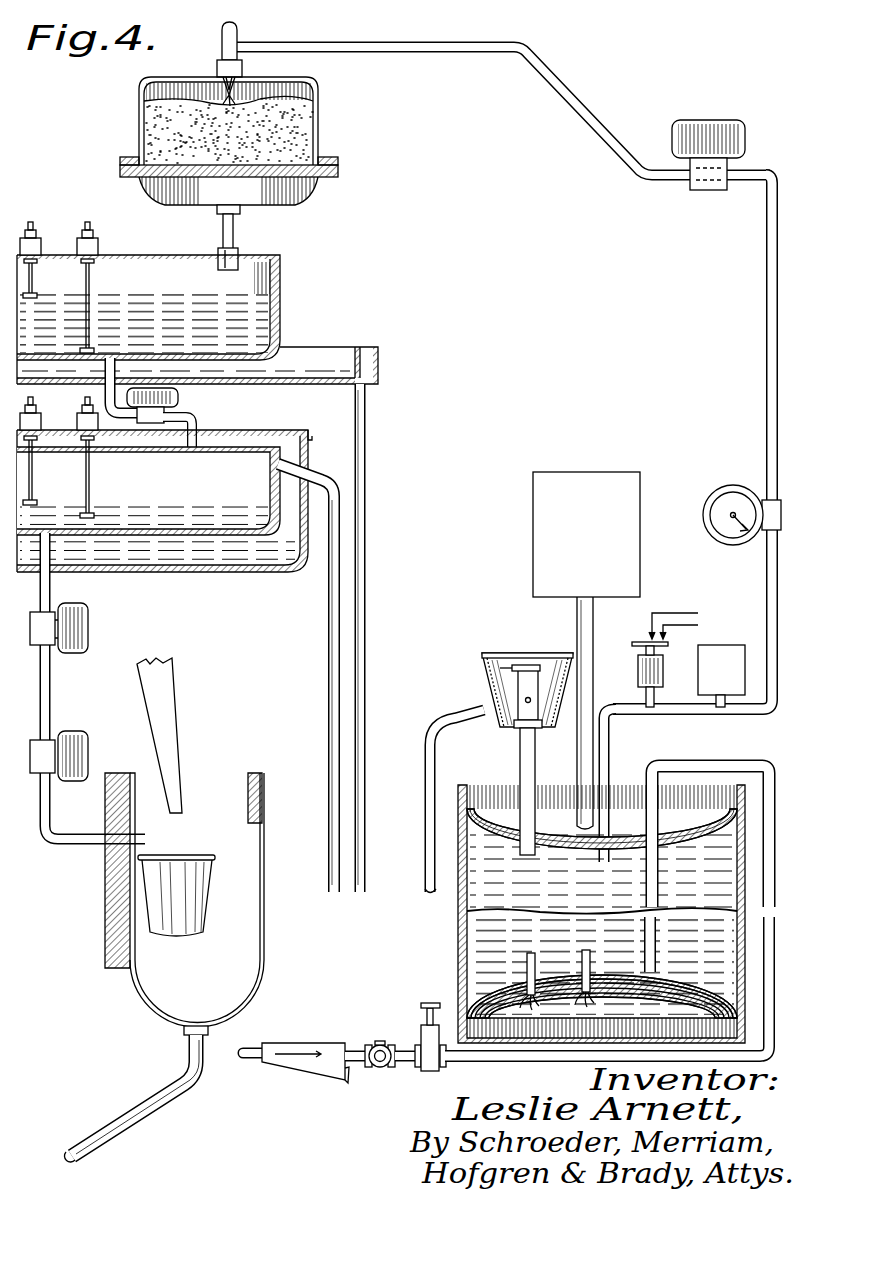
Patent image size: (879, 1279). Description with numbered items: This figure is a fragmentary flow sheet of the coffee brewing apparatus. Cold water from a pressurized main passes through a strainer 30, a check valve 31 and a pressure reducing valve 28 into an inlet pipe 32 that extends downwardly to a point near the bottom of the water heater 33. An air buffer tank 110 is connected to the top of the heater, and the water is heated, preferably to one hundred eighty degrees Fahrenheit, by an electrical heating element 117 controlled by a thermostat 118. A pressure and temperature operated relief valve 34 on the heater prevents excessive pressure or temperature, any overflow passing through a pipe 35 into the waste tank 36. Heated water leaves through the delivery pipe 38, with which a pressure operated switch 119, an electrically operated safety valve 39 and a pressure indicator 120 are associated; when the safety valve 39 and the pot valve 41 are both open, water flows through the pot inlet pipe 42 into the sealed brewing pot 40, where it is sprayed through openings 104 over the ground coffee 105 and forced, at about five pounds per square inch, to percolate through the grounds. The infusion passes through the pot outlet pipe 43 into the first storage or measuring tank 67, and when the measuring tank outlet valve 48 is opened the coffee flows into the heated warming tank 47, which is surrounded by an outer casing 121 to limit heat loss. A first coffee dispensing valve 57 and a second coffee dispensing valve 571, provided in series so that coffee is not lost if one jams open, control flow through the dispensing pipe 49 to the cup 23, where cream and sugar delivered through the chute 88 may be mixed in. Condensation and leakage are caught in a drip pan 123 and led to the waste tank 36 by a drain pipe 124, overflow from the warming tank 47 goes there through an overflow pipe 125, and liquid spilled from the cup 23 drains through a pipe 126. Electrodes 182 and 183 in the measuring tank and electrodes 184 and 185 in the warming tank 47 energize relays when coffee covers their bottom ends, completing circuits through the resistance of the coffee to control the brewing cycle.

The cup 23 is at (195, 888).
The pressure reducing valve 28 is at (430, 1068).
The strainer 30 is at (305, 1048).
The check valve 31 is at (380, 1040).
The inlet pipe 32 is at (535, 1063).
The water heater 33 is at (482, 896).
The pressure and temperature operated relief valve 34 is at (522, 690).
The pipe 35 is at (426, 823).
The waste tank 36 is at (610, 736).
The delivery pipe 38 is at (766, 386).
The electrically operated safety valve 39 is at (722, 660).
The brewing pot 40 is at (327, 122).
The pot valve 41 is at (735, 120).
The pot inlet pipe 42 is at (578, 100).
The pot outlet pipe 43 is at (236, 231).
The warming tank 47 is at (162, 536).
The measuring tank outlet valve 48 is at (178, 401).
The dispensing pipe 49 is at (88, 843).
The coffee dispensing valve 57 is at (80, 618).
The coffee dispensing valve 571 is at (90, 742).
The tank 67 is at (280, 296).
The chute 88 is at (168, 699).
The openings 104 is at (243, 90).
The ground coffee 105 is at (195, 135).
The air buffer tank 110 is at (545, 532).
The electrical heating element 117 is at (529, 970).
The thermostat 118 is at (585, 960).
The pressure operated switch 119 is at (648, 668).
The pressure indicator 120 is at (718, 536).
The outer casing 121 is at (225, 573).
The drip pan 123 is at (295, 385).
The drain pipe 124 is at (366, 425).
The overflow pipe 125 is at (328, 645).
The pipe 126 is at (148, 1100).
The electrode 182 is at (40, 293).
The electrode 183 is at (92, 348).
The electrode 184 is at (36, 490).
The electrode 185 is at (95, 515).